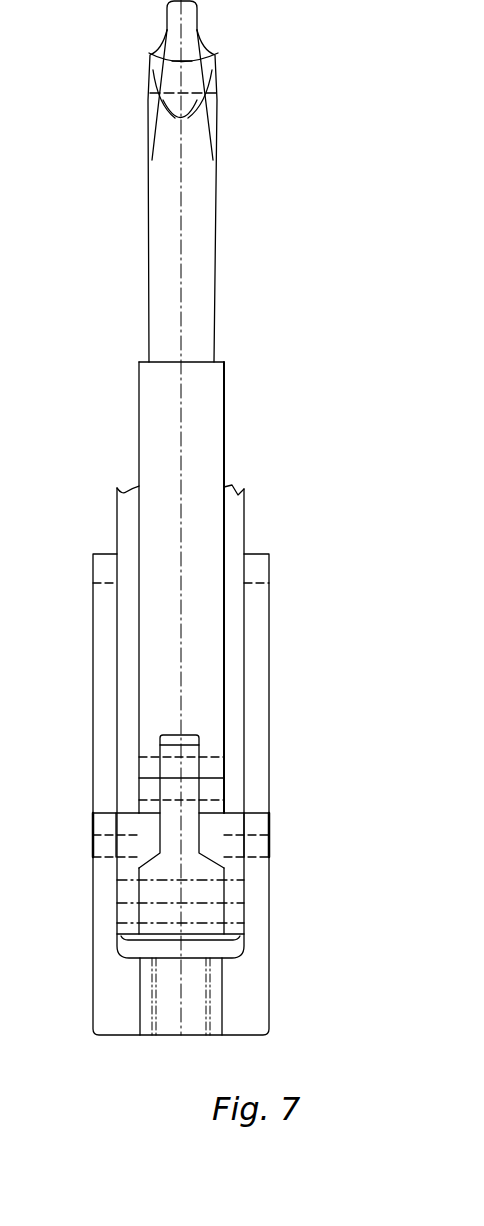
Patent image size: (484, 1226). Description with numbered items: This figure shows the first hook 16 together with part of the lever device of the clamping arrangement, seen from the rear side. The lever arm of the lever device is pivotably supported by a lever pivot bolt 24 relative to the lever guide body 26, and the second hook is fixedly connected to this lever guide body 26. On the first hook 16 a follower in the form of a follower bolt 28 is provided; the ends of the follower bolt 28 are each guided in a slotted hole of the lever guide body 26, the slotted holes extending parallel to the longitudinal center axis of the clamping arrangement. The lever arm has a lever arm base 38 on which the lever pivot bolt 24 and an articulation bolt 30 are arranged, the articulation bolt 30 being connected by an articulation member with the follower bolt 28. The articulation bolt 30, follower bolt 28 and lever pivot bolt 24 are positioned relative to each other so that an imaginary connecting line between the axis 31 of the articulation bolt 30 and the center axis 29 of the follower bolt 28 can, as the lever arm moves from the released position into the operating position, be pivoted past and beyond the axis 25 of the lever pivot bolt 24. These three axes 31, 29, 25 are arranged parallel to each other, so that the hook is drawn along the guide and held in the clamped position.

The first hook 16 is at (205, 270).
The lever arm base 38 is at (237, 663).
The lever guide body 26 is at (263, 712).
The center axis of the follower bolt 29 is at (230, 767).
The follower bolt 28 is at (147, 767).
The axis of the lever pivot bolt 25 is at (255, 833).
The lever pivot bolt 24 is at (262, 849).
The axis of the articulation bolt 31 is at (232, 898).
The articulation bolt 30 is at (232, 912).